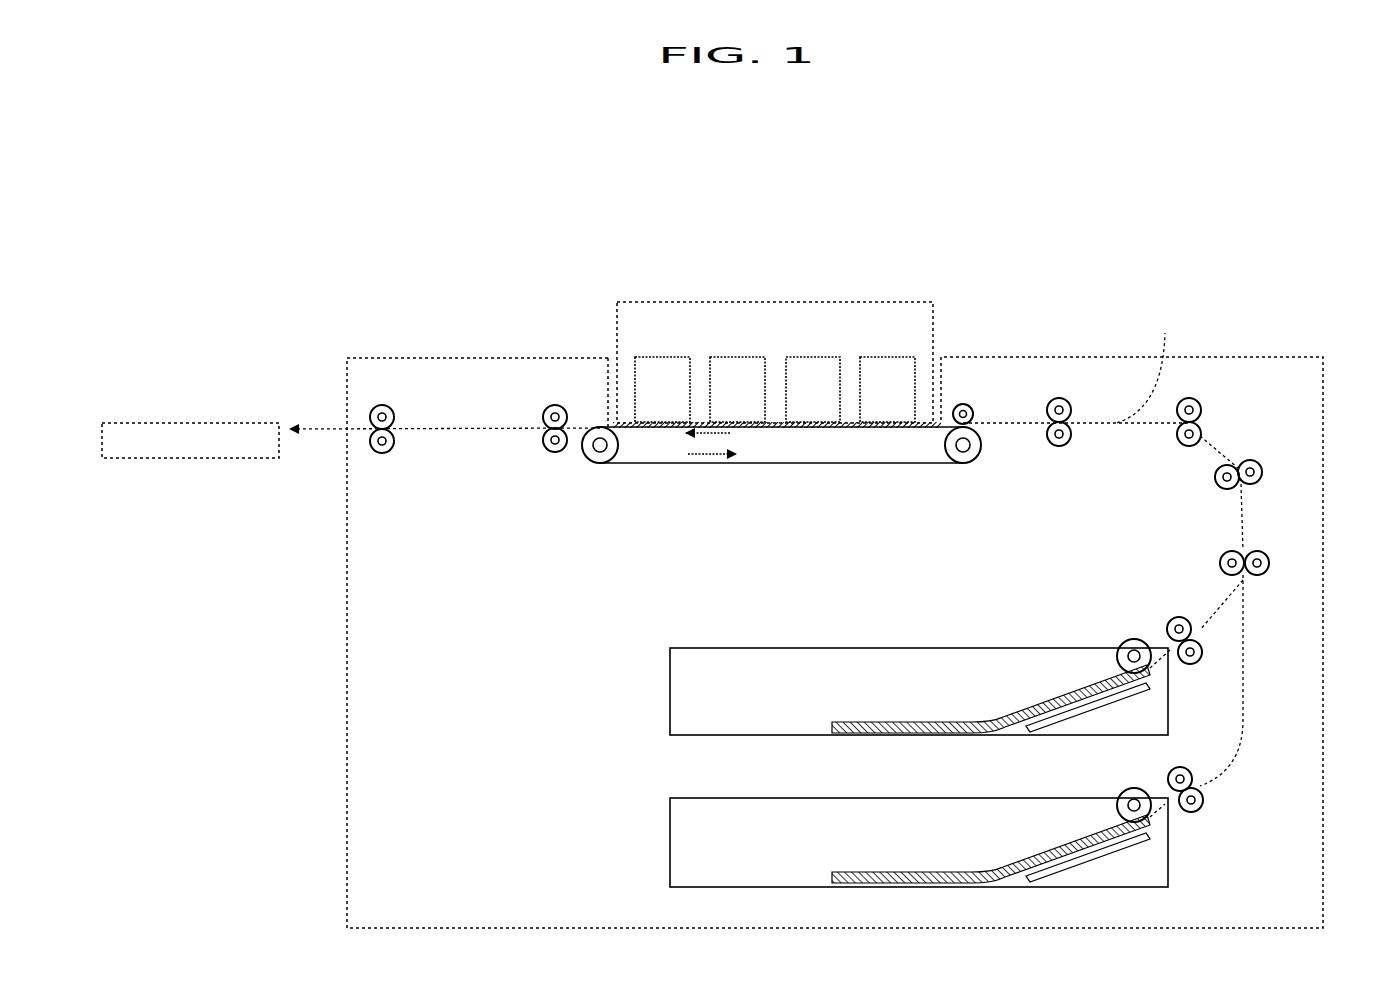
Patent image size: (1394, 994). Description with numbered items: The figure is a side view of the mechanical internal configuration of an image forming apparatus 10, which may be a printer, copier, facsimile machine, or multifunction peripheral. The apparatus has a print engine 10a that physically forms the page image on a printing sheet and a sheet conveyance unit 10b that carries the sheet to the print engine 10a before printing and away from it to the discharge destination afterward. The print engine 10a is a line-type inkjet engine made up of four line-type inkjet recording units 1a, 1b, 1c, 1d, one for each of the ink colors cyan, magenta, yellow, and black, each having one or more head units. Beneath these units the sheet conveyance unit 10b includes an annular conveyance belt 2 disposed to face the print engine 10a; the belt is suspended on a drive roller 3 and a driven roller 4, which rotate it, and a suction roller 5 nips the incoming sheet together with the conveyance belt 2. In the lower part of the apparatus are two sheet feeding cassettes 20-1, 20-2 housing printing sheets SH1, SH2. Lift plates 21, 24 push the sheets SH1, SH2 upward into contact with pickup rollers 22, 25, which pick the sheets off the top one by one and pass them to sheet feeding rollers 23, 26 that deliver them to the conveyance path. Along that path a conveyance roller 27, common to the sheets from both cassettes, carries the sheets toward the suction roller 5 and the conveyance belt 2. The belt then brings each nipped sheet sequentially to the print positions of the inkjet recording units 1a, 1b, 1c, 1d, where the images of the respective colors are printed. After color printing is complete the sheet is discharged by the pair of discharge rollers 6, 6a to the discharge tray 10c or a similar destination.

The image forming apparatus 10 is at (1220, 207).
The print engine 10a is at (936, 328).
The sheet conveyance unit 10b is at (1323, 404).
The discharge tray 10c is at (240, 420).
The inkjet recording unit 1a is at (892, 353).
The inkjet recording unit 1b is at (817, 353).
The inkjet recording unit 1c is at (742, 353).
The inkjet recording unit 1d is at (667, 353).
The conveyance belt 2 is at (813, 463).
The drive roller 3 is at (591, 456).
The driven roller 4 is at (971, 456).
The suction roller 5 is at (968, 404).
The discharge roller 6 is at (551, 404).
The discharge roller 6a is at (383, 404).
The conveyance roller 27 is at (1060, 398).
The sheet feeding cassette 20-1 is at (670, 690).
The sheet feeding cassette 20-2 is at (670, 840).
The lift plate 21 is at (1054, 725).
The pickup roller 22 is at (1124, 645).
The sheet feeding roller 23 is at (1168, 625).
The lift plate 24 is at (1054, 876).
The pickup roller 25 is at (1124, 797).
The sheet feeding roller 26 is at (1168, 776).
The printing sheets SH1 is at (855, 720).
The printing sheets SH2 is at (855, 873).